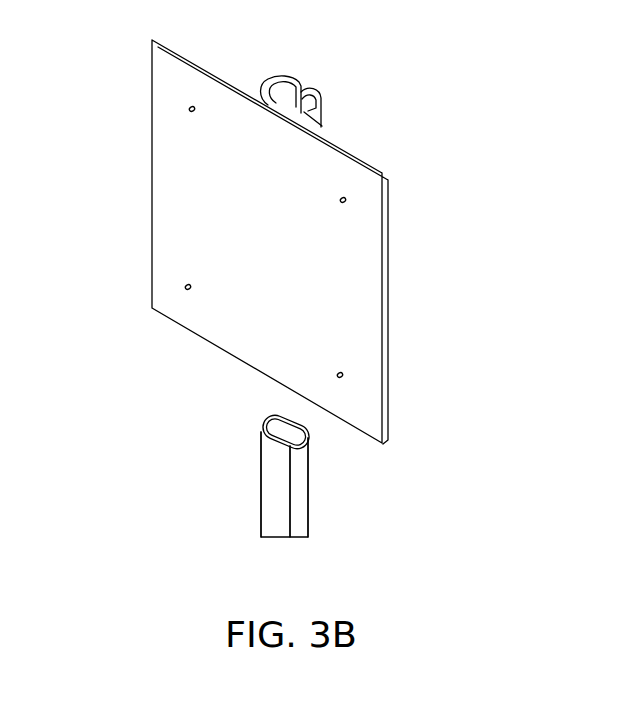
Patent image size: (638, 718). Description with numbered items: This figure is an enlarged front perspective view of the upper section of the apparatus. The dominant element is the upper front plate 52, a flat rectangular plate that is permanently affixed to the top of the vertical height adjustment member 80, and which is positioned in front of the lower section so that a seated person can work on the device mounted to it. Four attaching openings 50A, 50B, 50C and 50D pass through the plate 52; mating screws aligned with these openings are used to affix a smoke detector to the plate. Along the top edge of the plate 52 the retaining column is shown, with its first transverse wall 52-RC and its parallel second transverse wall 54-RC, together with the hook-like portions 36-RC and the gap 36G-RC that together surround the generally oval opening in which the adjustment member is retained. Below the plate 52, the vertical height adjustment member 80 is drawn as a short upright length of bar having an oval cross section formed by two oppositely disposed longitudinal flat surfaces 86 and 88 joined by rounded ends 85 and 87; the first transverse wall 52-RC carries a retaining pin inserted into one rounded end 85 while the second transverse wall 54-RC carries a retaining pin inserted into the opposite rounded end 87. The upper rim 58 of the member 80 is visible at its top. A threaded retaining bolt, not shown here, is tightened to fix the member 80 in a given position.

The upper front plate 52 is at (385, 174).
The second transverse wall 54-RC is at (264, 82).
The gap of retaining clip hook 36G-RC is at (307, 86).
The retaining clip hook 36-RC is at (323, 102).
The first transverse wall 52-RC is at (318, 127).
The opening 50A is at (346, 200).
The opening 50B is at (398, 383).
The opening 50C is at (188, 109).
The opening 50D is at (184, 287).
The vertical height adjustment member 80 is at (270, 508).
The rounded end 85 is at (270, 453).
The longitudinal flat surface 86 is at (288, 481).
The rounded end 87 is at (300, 522).
The longitudinal flat surface 88 is at (280, 427).
The sleeve rim 58 is at (306, 437).